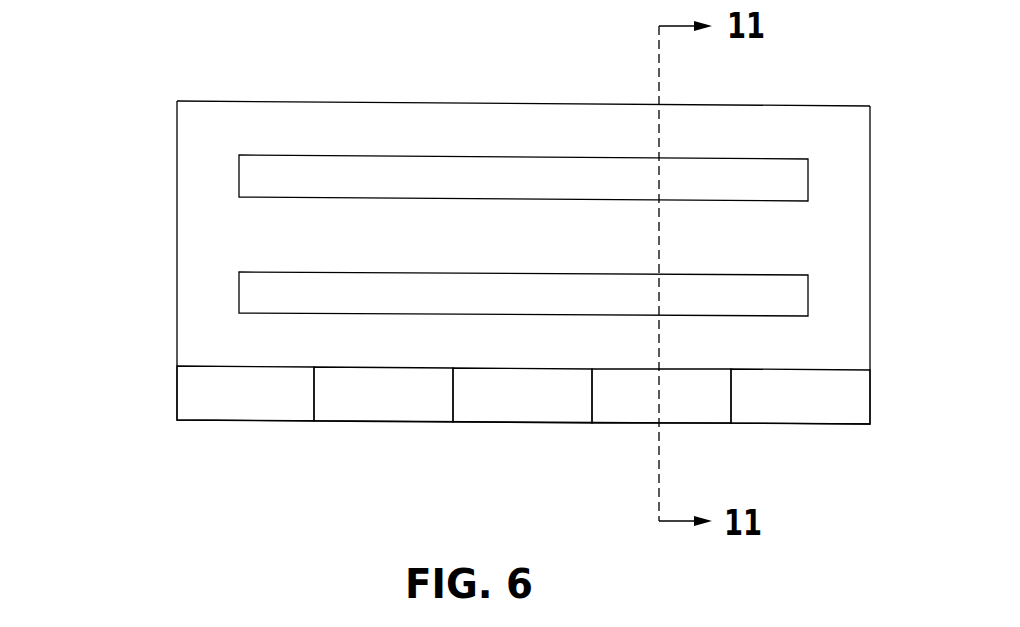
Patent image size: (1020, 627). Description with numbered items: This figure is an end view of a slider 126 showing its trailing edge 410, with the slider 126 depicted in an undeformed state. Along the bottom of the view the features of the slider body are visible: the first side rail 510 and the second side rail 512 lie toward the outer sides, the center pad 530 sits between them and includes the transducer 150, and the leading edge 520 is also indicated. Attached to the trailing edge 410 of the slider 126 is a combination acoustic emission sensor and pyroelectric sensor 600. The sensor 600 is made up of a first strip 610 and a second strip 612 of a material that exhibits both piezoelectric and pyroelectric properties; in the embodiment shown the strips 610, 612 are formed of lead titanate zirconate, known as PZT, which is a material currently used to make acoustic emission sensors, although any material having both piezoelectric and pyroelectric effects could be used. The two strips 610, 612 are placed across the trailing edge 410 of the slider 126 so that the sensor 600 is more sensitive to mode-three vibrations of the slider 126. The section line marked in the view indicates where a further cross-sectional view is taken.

The combination acoustic emission sensor and pyroelectric sensor 600 is at (138, 282).
The trailing edge 410 is at (833, 122).
The slider 126 is at (526, 86).
The first strip 610 is at (365, 168).
The second strip 612 is at (793, 303).
The transducer 150 is at (521, 407).
The second side rail 512 is at (252, 420).
The leading edge 520 is at (390, 421).
The center pad 530 is at (490, 422).
The first side rail 510 is at (805, 424).